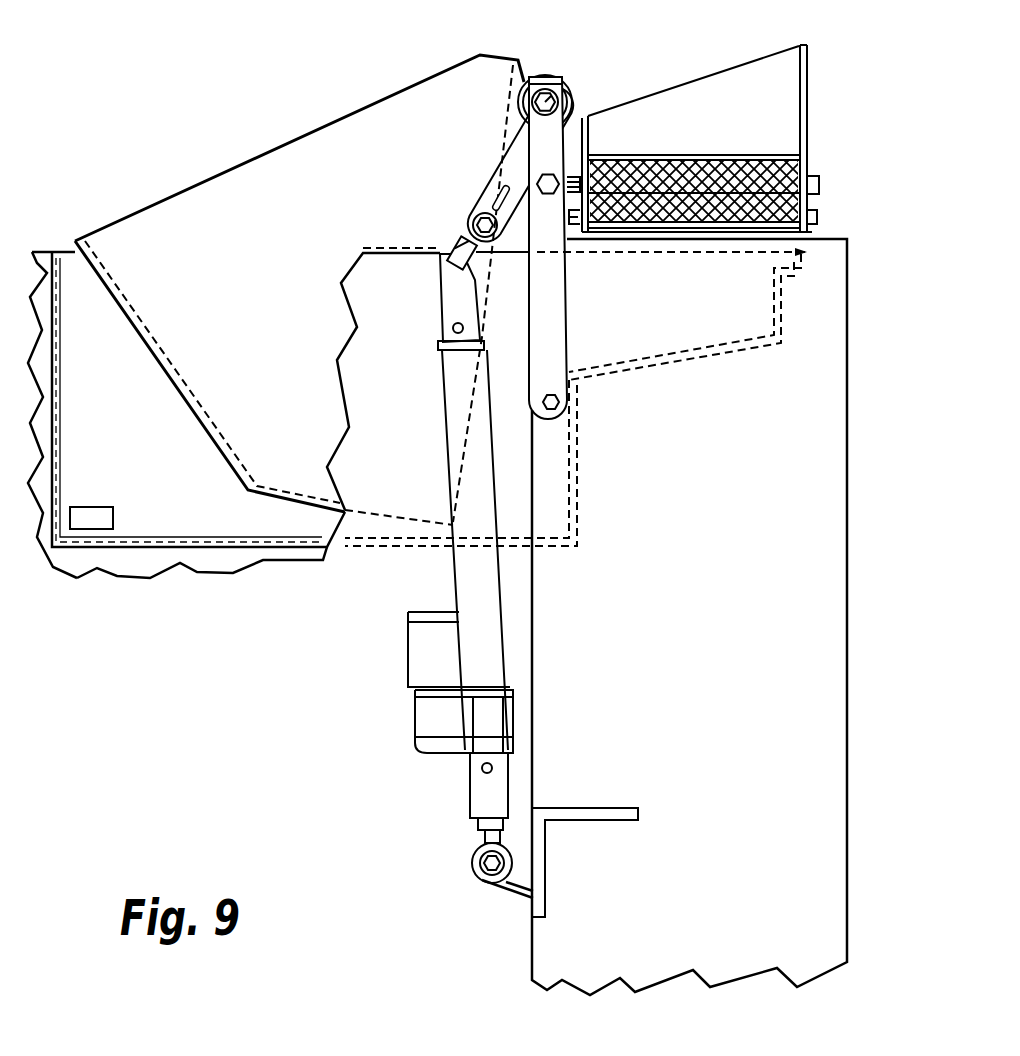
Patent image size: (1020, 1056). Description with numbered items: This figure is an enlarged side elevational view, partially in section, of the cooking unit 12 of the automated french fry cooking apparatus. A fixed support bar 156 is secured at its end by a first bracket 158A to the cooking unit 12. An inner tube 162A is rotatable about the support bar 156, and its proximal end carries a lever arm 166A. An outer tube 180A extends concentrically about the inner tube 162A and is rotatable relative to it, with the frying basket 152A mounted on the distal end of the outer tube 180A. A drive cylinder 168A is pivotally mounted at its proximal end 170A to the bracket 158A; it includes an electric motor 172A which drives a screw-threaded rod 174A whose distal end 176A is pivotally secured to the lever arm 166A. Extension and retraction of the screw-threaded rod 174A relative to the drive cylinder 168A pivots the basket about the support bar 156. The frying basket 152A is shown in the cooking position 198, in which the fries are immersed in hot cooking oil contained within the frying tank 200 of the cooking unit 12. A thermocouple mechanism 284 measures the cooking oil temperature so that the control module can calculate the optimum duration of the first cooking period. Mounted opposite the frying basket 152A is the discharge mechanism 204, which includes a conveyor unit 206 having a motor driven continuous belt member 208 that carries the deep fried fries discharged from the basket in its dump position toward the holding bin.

The cooking unit 12 is at (525, 951).
The frying basket 152A is at (346, 108).
The fixed support bar 156 is at (551, 79).
The first bracket 158A is at (570, 380).
The inner tube 162A is at (569, 107).
The lever arm 166A is at (500, 163).
The drive cylinder 168A is at (468, 566).
The proximal end of drive cylinder 170A is at (495, 845).
The electric motor 172A is at (433, 713).
The screw-threaded rod 174A is at (455, 292).
The distal end of screw-threaded rod 176A is at (462, 241).
The outer tube 180A is at (573, 90).
The cooking position 198 is at (193, 412).
The frying tank 200 is at (193, 546).
The discharge mechanism 204 is at (815, 104).
The conveyor unit 206 is at (800, 166).
The motor driven continuous belt member 208 is at (735, 160).
The thermocouple mechanism 284 is at (100, 521).